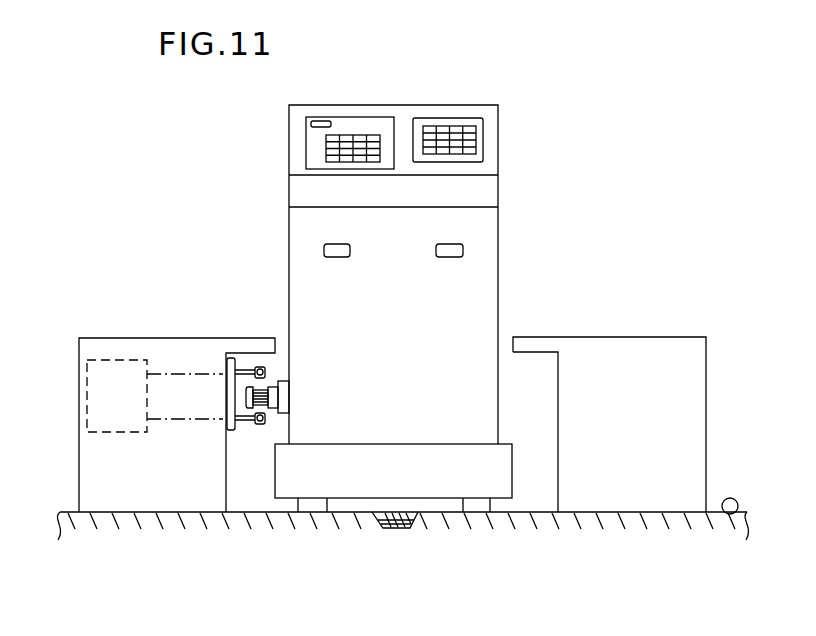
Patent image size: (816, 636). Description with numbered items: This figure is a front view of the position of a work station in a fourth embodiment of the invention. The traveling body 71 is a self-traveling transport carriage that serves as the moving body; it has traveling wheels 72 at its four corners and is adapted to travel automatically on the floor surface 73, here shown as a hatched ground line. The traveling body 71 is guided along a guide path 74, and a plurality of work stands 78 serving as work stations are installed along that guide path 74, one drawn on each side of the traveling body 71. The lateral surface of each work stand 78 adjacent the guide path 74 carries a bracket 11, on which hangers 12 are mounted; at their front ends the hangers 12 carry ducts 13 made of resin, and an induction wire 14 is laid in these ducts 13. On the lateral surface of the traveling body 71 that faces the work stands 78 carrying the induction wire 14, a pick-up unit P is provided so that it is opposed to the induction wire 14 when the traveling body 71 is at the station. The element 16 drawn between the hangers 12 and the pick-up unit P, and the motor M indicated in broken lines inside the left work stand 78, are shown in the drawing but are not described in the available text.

The traveling body 71 is at (455, 105).
The traveling wheels 72 is at (486, 509).
The floor surface 73 is at (727, 514).
The guide path 74 is at (400, 530).
The work stand 78 is at (118, 338).
The bracket 11 is at (227, 423).
The hangers 12 is at (243, 364).
The ducts 13 is at (260, 366).
The induction wire 14 is at (266, 372).
The plunger 16 is at (262, 398).
The pick-up unit P is at (299, 395).
The motor M is at (115, 432).